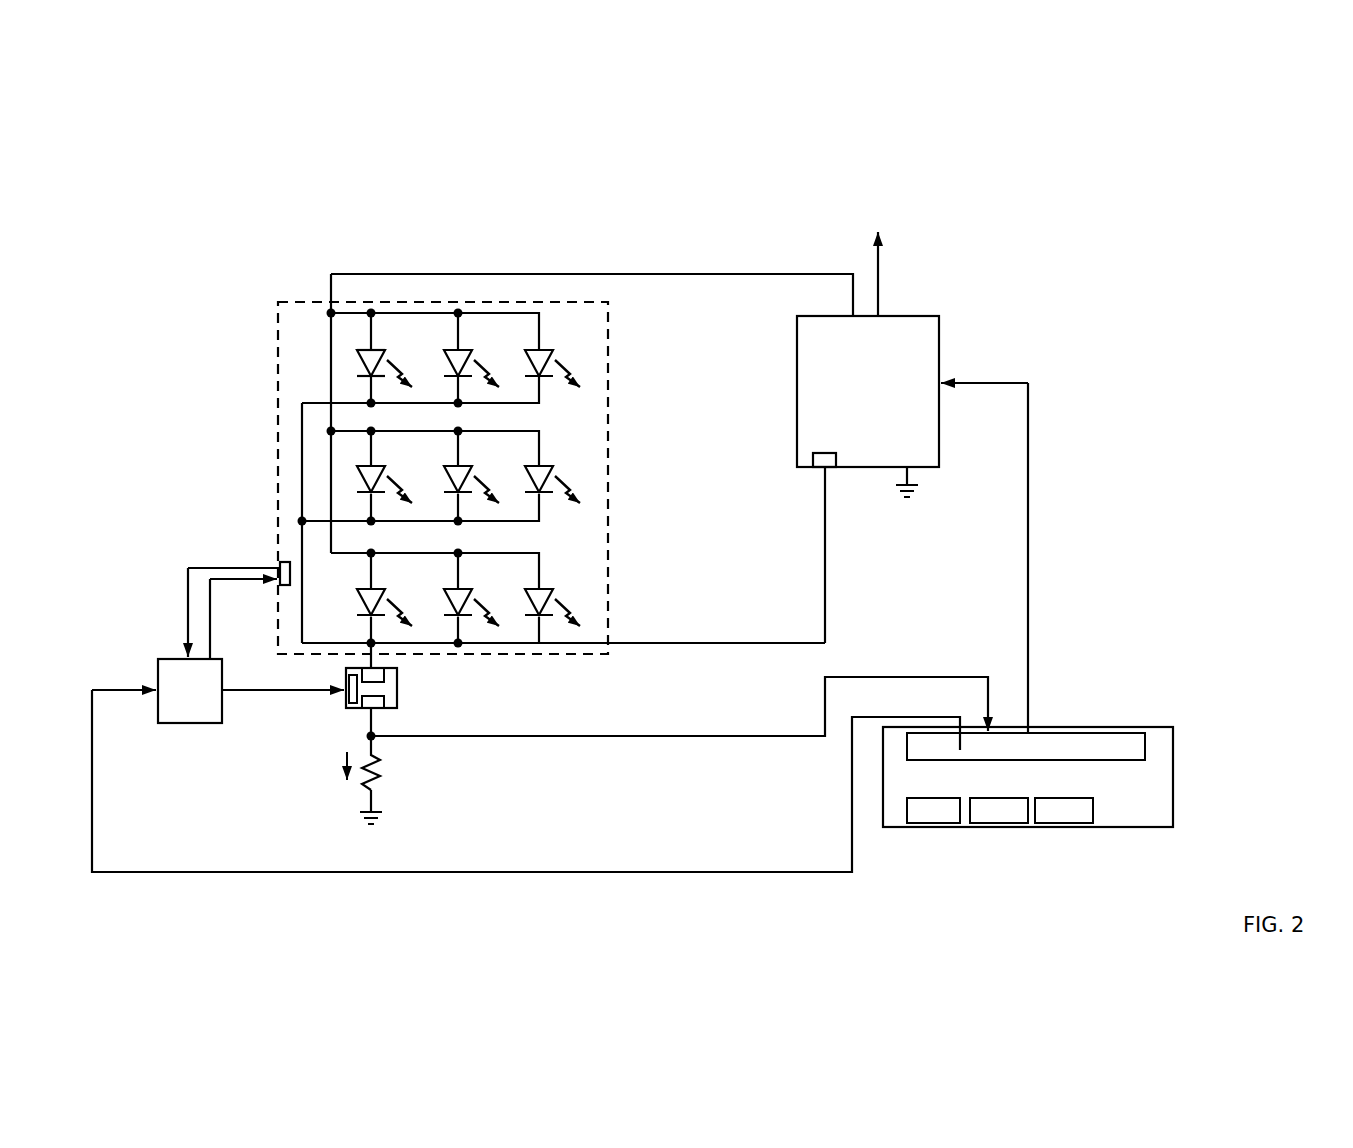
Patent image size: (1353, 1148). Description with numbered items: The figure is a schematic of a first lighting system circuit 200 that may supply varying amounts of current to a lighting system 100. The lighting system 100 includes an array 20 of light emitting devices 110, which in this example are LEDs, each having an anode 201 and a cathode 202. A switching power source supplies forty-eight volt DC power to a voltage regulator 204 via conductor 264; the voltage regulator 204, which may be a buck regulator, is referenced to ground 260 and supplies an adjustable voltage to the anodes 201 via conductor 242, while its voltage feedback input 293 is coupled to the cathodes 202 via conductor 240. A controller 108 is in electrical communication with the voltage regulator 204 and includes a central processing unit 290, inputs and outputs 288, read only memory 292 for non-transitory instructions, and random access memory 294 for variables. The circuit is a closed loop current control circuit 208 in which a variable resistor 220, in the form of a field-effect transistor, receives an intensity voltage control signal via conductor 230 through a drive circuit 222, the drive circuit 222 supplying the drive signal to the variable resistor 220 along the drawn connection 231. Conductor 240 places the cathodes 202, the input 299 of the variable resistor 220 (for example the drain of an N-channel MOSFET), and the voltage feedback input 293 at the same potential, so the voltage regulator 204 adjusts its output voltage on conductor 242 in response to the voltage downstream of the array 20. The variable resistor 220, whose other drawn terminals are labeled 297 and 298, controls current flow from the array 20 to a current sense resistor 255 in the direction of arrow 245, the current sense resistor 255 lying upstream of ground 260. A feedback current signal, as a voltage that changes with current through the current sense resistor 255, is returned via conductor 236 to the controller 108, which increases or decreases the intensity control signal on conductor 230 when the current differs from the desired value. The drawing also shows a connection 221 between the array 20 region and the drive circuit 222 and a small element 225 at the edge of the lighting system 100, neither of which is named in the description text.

The lighting system 200 is at (1154, 126).
The LED light fixture 100 is at (270, 305).
The LED string 20 is at (555, 400).
The LED 110 is at (373, 351).
The LED anode 201 is at (360, 349).
The LED cathode 202 is at (364, 377).
The power supply 204 is at (868, 391).
The control circuit 208 is at (685, 670).
The transistor 220 is at (399, 683).
The thermal interface 221 is at (276, 480).
The sensor 222 is at (185, 655).
The temperature sensor 225 is at (280, 562).
The control signal line 230 is at (97, 690).
The gate drive signal 231 is at (240, 692).
The feedback line 236 is at (436, 738).
The return line 240 is at (827, 632).
The supply line 242 is at (600, 273).
The current direction 245 is at (340, 760).
The sense resistor 255 is at (382, 782).
The ground 260 is at (912, 492).
The voltage input 264 is at (882, 282).
The processor 288 is at (1026, 747).
The memory module 290 is at (933, 810).
The memory module 292 is at (999, 810).
The output terminal 293 is at (818, 470).
The memory module 294 is at (1064, 810).
The source terminal 297 is at (385, 703).
The gate terminal 298 is at (352, 695).
The drain terminal 299 is at (358, 669).
The controller 108 is at (1028, 777).